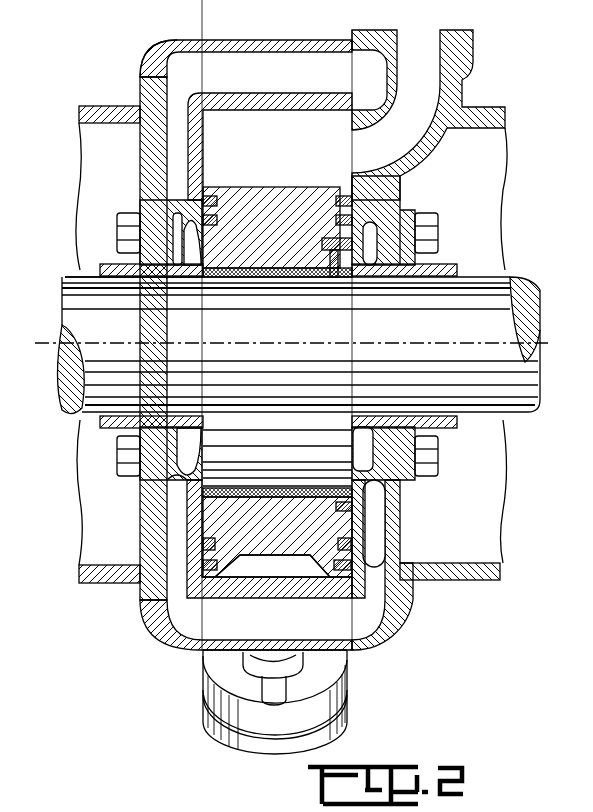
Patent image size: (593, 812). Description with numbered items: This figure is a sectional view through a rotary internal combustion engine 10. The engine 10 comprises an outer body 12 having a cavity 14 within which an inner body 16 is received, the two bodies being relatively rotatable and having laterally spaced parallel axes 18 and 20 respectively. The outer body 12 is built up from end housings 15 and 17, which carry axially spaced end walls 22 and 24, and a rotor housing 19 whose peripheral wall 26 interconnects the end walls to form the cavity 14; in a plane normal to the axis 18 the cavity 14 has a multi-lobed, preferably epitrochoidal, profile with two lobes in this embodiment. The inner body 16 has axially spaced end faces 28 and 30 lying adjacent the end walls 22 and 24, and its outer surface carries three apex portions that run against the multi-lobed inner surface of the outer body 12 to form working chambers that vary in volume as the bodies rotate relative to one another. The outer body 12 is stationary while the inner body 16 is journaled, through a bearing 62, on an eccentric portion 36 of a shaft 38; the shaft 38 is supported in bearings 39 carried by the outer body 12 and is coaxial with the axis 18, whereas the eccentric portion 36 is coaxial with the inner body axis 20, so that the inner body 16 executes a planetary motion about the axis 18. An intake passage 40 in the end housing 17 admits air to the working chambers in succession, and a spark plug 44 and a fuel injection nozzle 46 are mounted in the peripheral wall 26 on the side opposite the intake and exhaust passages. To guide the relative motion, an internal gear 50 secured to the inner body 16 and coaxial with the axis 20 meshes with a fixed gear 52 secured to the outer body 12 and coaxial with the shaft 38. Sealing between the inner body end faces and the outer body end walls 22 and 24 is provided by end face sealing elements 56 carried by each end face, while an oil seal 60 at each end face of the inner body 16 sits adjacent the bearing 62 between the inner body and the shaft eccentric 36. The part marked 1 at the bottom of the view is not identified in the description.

The pump assembly 1 is at (200, 697).
The rotary internal combustion engine 10 is at (216, 32).
The outer body 12 is at (150, 45).
The cavity 14 is at (282, 154).
The end housing 15 is at (148, 168).
The inner body 16 is at (281, 246).
The end housing 17 is at (392, 553).
The axis 18 is at (60, 343).
The rotor housing 19 is at (290, 40).
The axis 20 is at (310, 380).
The end wall 22 is at (145, 67).
The end wall 24 is at (352, 153).
The peripheral wall 26 is at (290, 96).
The end face 28 is at (218, 211).
The end face 30 is at (337, 212).
The eccentric portion 36 is at (320, 447).
The shaft 38 is at (64, 282).
The bearings 39 is at (92, 268).
The intake passage 40 is at (430, 95).
The spark plug 44 is at (314, 672).
The fuel injection nozzle 46 is at (346, 712).
The internal gear 50 is at (350, 506).
The fixed gear 52 is at (333, 278).
The end face sealing elements 56 is at (215, 565).
The oil seal 60 is at (205, 543).
The bearing 62 is at (252, 505).